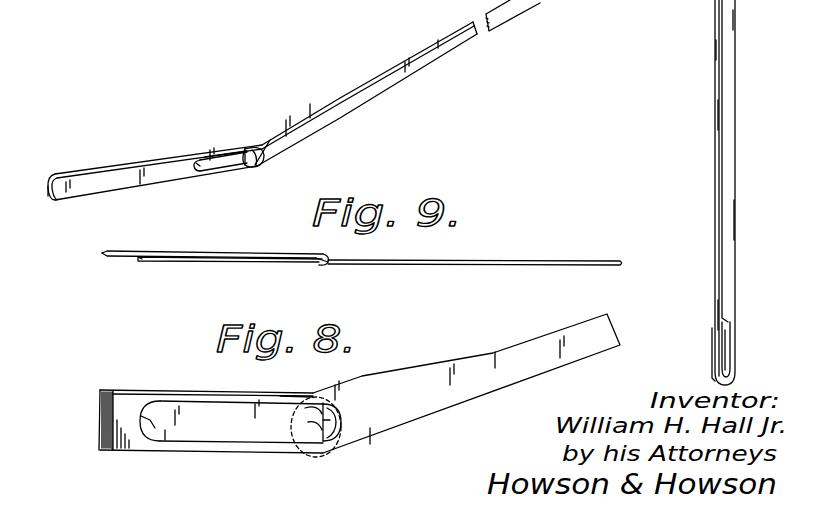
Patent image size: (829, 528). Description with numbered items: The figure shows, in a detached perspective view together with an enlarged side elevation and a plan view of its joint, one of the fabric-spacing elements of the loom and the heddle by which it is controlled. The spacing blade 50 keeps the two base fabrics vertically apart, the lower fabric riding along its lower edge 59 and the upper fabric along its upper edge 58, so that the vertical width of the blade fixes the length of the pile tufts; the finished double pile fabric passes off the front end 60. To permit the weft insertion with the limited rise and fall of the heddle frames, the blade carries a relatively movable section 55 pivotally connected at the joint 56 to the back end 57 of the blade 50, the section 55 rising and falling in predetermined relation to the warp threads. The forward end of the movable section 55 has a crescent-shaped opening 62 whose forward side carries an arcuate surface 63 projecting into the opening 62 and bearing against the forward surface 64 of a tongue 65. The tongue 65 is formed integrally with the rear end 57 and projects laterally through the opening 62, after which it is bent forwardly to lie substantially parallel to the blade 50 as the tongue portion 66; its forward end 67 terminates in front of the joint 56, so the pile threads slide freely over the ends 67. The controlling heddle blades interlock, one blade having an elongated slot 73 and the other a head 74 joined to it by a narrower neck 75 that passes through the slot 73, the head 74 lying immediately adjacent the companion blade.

In FIG. 9, the spacing blade 50 is at (110, 175).
In FIG. 8, the spacing blade 50 is at (103, 254).
In FIG. 6, the spacing blade 50 is at (172, 391).
In FIG. 9, the movable section 55 is at (502, 22).
In FIG. 8, the movable section 55 is at (447, 262).
In FIG. 6, the movable section 55 is at (470, 364).
In FIG. 9, the pivotal connection 56 is at (250, 150).
In FIG. 6, the pivotal connection 56 is at (312, 436).
In FIG. 9, the back end of spacing blade 57 is at (238, 150).
In FIG. 6, the back end of spacing blade 57 is at (288, 400).
In FIG. 9, the upper edge 58 is at (157, 160).
In FIG. 8, the upper edge 58 is at (215, 258).
In FIG. 6, the upper edge 58 is at (200, 391).
In FIG. 9, the lower edge 59 is at (140, 188).
In FIG. 6, the lower edge 59 is at (222, 452).
In FIG. 9, the front end of spacing blade 60 is at (50, 197).
In FIG. 9, the opening 62 is at (259, 156).
In FIG. 6, the opening 62 is at (340, 416).
In FIG. 6, the arcuate surface 63 is at (320, 406).
In FIG. 6, the forward surface of tongue 64 is at (328, 430).
In FIG. 9, the tongue 65 is at (263, 140).
In FIG. 8, the tongue 65 is at (326, 263).
In FIG. 6, the tongue 65 is at (327, 420).
In FIG. 9, the tongue portion 66 is at (228, 165).
In FIG. 8, the tongue portion 66 is at (231, 262).
In FIG. 6, the tongue portion 66 is at (266, 439).
In FIG. 9, the forward end of tongue portion 67 is at (198, 172).
In FIG. 8, the forward end of tongue portion 67 is at (137, 261).
In FIG. 6, the forward end of tongue portion 67 is at (151, 426).
In FIG. 6, the elongated slot 73 is at (731, 351).
In FIG. 6, the head 74 is at (713, 362).
In FIG. 6, the neck 75 is at (729, 320).